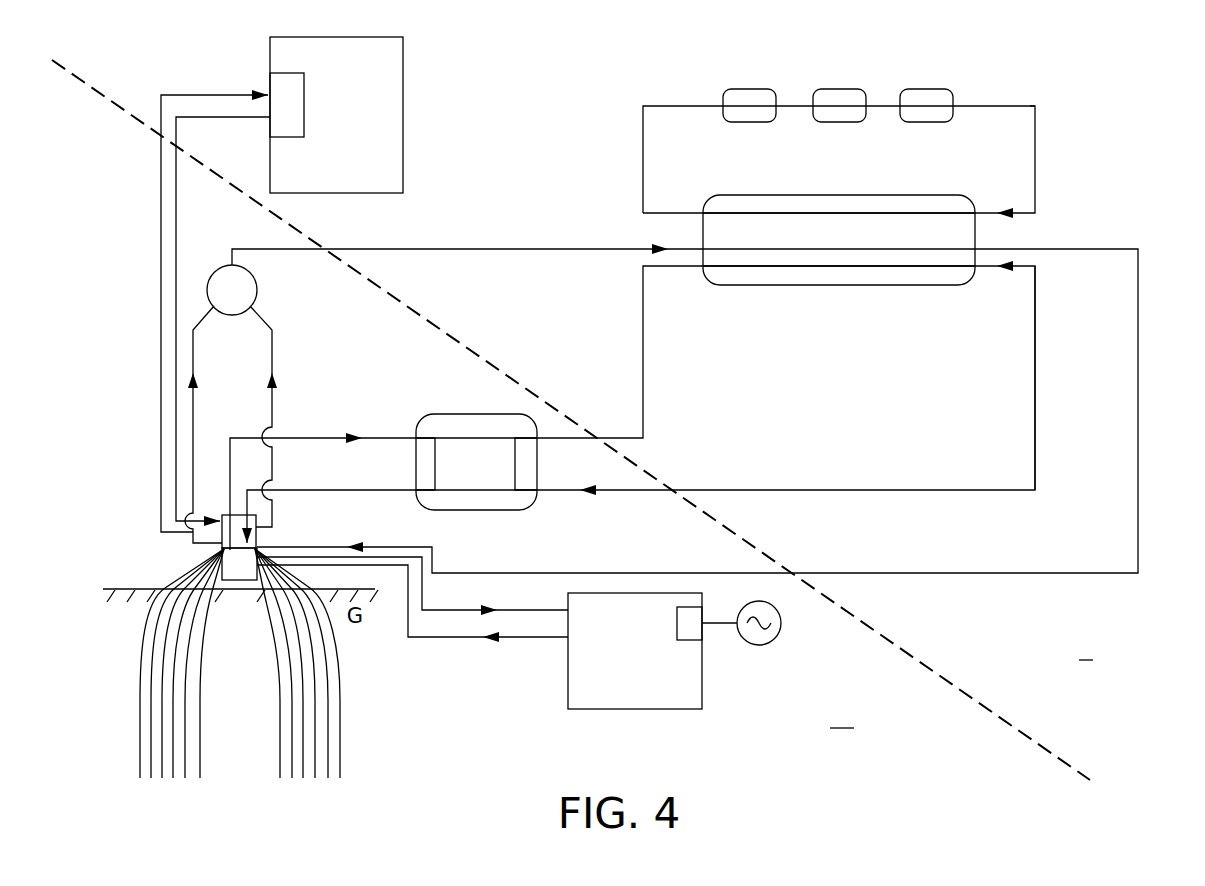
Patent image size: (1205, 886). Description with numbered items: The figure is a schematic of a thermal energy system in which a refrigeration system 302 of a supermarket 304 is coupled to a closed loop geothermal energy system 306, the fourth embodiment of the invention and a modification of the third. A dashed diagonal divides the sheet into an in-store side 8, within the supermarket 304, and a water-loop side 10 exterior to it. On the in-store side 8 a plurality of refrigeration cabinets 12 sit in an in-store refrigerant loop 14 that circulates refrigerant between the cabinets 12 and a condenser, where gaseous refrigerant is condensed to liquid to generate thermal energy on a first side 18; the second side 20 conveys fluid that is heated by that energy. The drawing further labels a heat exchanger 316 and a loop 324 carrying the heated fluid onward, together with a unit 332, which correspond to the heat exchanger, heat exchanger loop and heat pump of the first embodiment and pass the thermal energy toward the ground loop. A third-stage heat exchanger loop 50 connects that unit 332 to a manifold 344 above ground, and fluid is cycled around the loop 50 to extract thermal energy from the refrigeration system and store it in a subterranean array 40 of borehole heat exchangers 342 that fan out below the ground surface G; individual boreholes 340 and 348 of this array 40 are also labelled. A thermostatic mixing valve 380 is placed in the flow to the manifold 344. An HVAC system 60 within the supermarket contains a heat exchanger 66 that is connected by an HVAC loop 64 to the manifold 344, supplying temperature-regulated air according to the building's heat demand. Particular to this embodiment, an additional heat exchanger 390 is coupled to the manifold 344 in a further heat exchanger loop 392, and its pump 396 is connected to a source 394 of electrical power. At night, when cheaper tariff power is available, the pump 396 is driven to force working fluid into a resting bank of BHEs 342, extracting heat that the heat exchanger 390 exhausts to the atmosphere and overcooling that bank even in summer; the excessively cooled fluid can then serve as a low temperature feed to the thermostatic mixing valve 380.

The in-store side 8 is at (1086, 650).
The water-loop side 10 is at (842, 718).
The refrigeration cabinet 12 is at (750, 89).
The in-store refrigerant loop 14 is at (1036, 152).
The first side of the condenser 18 is at (946, 200).
The second side of the condenser 20 is at (921, 270).
The array of borehole heat exchangers 40 is at (158, 576).
The third-stage heat exchanger loop 50 is at (317, 437).
The HVAC system 60 is at (403, 117).
The HVAC loop 64 is at (176, 225).
The heat exchanger within the HVAC system 66 is at (272, 127).
The refrigeration system 302 is at (1017, 88).
The supermarket 304 is at (1109, 118).
The closed loop geothermal energy system 306 is at (372, 686).
The heat exchanger 316 is at (838, 195).
The return line 324 is at (1037, 343).
The second heat exchanger 332 is at (479, 511).
The inner well 340 is at (200, 728).
The borehole heat exchangers 342 is at (140, 657).
The manifold 344 is at (235, 579).
The inner well 348 is at (279, 680).
The thermostatic mixing valve 380 is at (257, 290).
The additional heat exchanger 390 is at (703, 685).
The further heat exchanger loop 392 is at (548, 608).
The source of electrical power 394 is at (781, 624).
The pump 396 is at (690, 607).